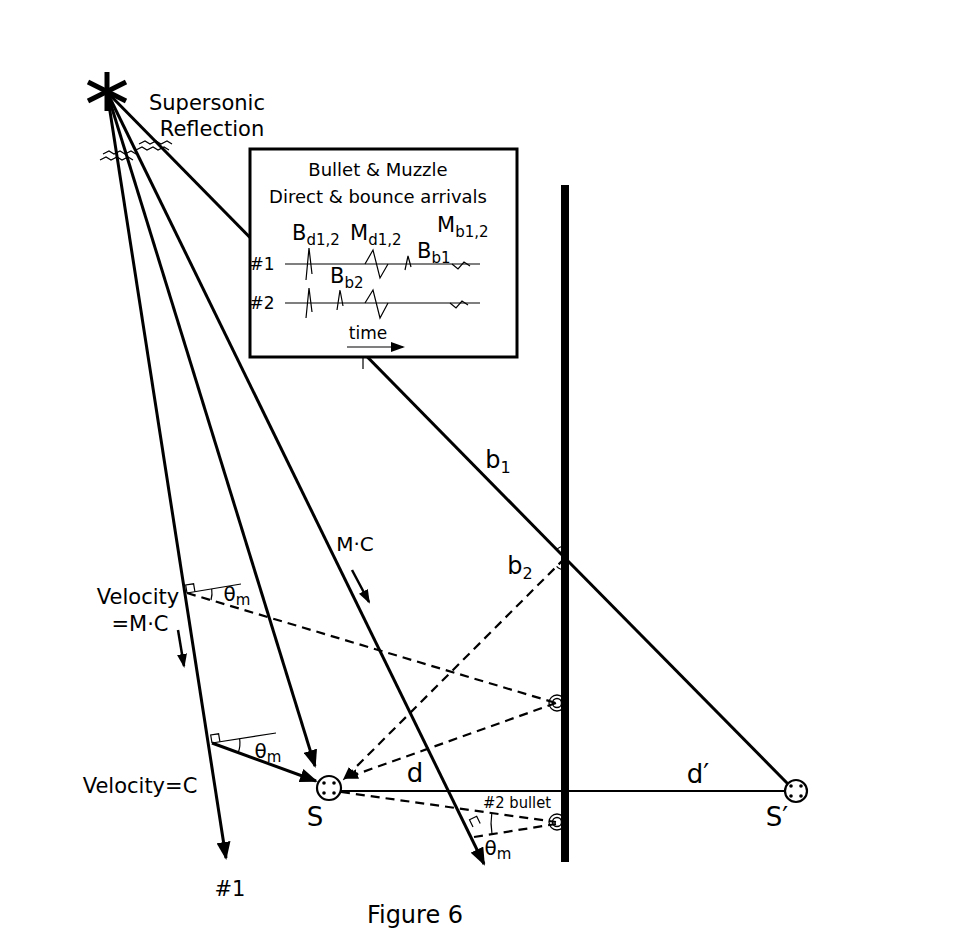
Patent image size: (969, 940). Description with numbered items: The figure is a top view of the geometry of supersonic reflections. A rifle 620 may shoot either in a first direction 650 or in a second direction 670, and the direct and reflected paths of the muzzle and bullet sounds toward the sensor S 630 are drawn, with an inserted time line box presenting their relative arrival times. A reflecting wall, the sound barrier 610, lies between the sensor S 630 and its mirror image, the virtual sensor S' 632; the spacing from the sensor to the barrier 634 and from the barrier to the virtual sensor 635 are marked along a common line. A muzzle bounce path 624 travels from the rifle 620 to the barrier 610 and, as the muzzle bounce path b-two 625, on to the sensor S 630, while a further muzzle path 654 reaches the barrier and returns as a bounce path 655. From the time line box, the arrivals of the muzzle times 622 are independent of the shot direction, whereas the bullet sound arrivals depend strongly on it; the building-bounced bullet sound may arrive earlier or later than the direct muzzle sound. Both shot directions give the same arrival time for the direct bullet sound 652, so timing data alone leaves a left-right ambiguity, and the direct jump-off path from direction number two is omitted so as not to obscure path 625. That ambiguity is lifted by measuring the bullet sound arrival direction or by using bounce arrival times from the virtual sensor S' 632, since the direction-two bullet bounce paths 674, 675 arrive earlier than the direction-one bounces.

The sound barrier 610 is at (573, 212).
The rifle 620 is at (84, 91).
The muzzle times 622 is at (202, 418).
The bounce shock wave path b1 624 is at (476, 474).
The muzzle bounce path 625 is at (481, 633).
The sensor S 630 is at (343, 799).
The virtual sensor S' 632 is at (812, 797).
The distance d from sensor to barrier 634 is at (520, 786).
The distance d' from barrier to virtual sensor 635 is at (618, 787).
The first direction 650 is at (130, 300).
The direct bullet sound 652 is at (195, 773).
The muzzle blast path toward barrier 654 is at (313, 625).
The muzzle blast bounce path to sensor 655 is at (380, 748).
The second direction 670 is at (191, 256).
The bullet bounce path 674 is at (533, 834).
The bullet bounce path 675 is at (420, 810).